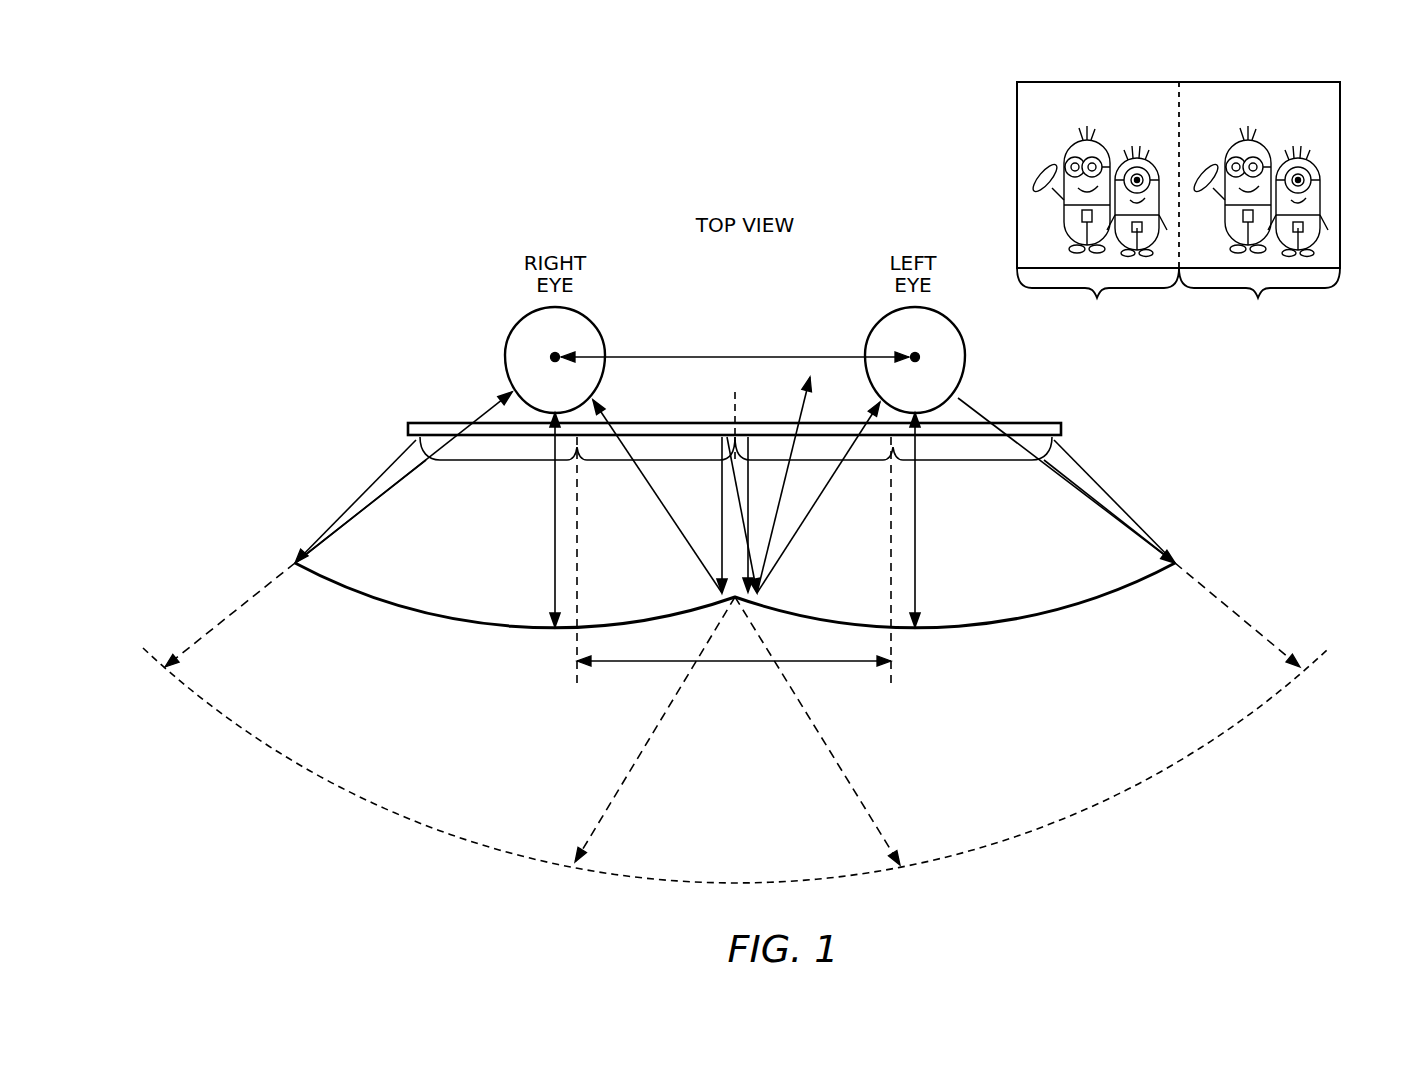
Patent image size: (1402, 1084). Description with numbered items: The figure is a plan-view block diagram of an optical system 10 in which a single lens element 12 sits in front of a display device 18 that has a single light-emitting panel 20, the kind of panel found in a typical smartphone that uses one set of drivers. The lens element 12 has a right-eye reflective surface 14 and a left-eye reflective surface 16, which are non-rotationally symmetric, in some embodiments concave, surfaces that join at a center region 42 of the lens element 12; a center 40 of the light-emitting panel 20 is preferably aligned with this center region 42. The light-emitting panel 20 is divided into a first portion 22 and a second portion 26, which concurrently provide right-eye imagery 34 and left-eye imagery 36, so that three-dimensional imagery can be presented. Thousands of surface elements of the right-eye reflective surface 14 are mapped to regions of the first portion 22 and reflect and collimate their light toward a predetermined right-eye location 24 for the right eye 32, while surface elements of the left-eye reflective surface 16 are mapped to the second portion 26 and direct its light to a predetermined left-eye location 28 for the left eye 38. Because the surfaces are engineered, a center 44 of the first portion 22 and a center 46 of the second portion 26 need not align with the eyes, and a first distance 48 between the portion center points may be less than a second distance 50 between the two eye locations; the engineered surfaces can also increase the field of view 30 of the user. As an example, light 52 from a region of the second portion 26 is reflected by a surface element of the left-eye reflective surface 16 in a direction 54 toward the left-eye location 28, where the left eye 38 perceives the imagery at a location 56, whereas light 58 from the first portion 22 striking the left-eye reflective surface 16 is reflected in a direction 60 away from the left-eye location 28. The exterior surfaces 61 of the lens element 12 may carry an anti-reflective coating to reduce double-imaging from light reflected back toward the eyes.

The optical system 10 is at (1002, 793).
The lens element 12 is at (446, 618).
The right-eye reflective surface 14 is at (362, 580).
The left-eye reflective surface 16 is at (1108, 580).
The display device 18 is at (1012, 423).
The light-emitting panel 20 is at (633, 443).
The first portion 22 is at (576, 452).
The predetermined right-eye location 24 is at (553, 356).
The second portion 26 is at (893, 452).
The predetermined left-eye location 28 is at (917, 357).
The field of view 30 is at (441, 831).
The right eye 32 is at (591, 323).
The right-eye imagery 34 is at (1335, 172).
The left-eye imagery 36 is at (1022, 172).
The left eye 38 is at (876, 323).
The center 40 is at (733, 412).
The center region 42 is at (735, 614).
The center 44 is at (576, 680).
The center 46 is at (892, 680).
The first distance 48 is at (608, 662).
The second distance 50 is at (744, 357).
The light 52 is at (1092, 474).
The direction 54 is at (1068, 480).
The location 56 is at (1305, 660).
The light 58 is at (742, 522).
The direction 60 is at (780, 514).
The exterior surfaces 61 is at (400, 617).